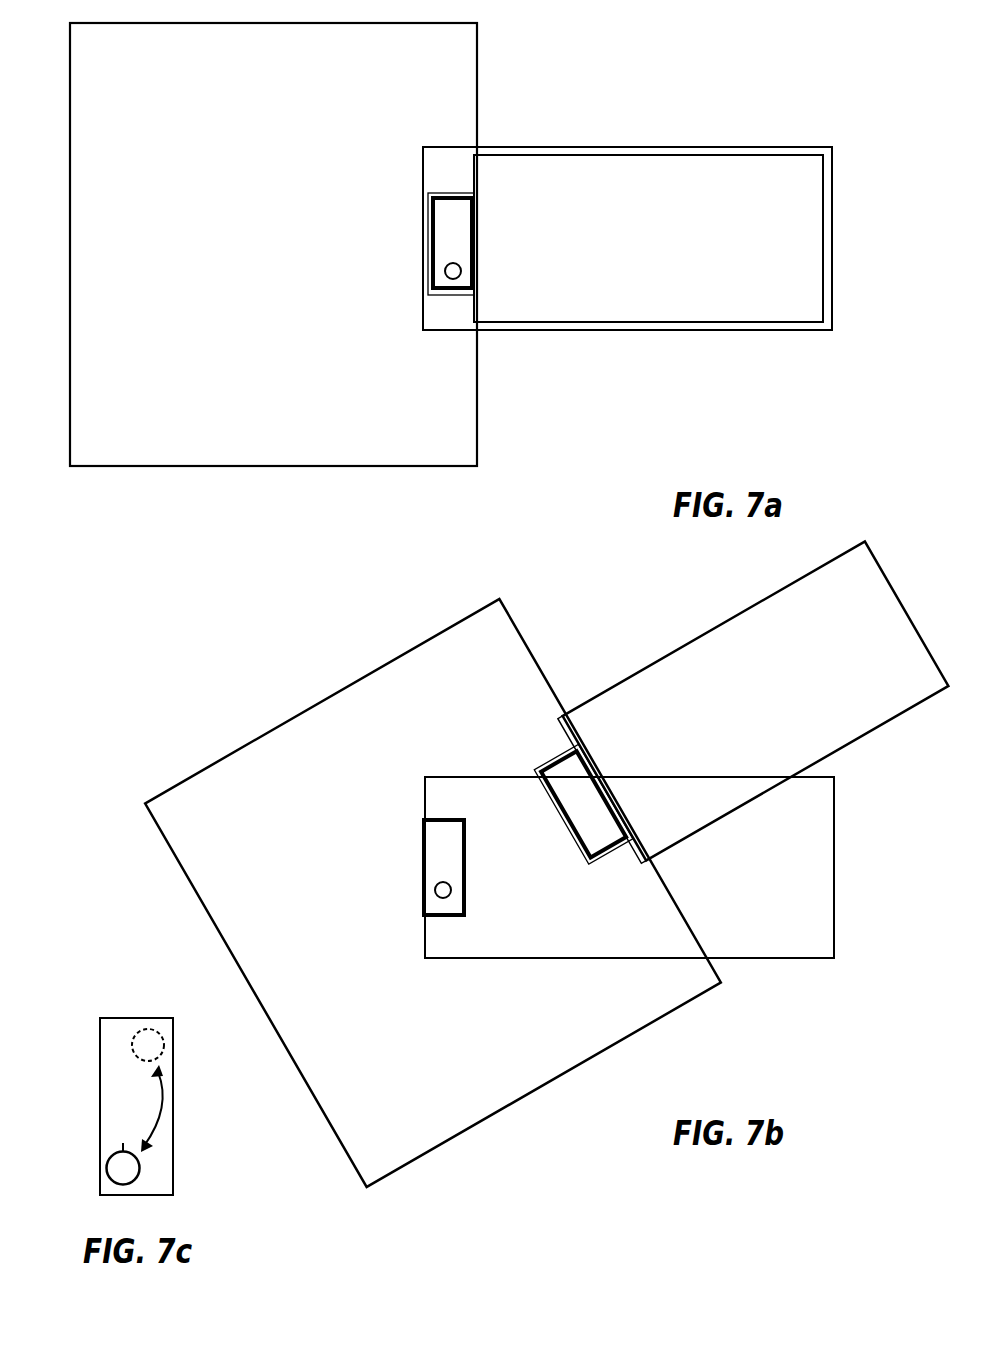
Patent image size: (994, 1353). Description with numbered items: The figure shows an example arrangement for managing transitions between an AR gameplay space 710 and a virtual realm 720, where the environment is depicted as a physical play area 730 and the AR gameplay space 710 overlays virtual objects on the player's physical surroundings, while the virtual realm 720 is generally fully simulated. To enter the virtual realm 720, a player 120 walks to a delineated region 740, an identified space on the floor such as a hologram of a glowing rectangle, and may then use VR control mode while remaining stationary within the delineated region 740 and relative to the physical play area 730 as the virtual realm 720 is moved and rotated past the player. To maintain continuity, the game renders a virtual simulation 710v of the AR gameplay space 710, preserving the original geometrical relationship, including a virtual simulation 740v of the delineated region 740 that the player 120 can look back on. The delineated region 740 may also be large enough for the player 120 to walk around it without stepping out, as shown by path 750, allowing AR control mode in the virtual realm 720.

In FIG. 7a, the virtual realm 720 is at (453, 86).
In FIG. 7b, the virtual realm 720 is at (505, 654).
In FIG. 7a, the AR gameplay space 710 is at (815, 210).
In FIG. 7b, the virtual simulation of the AR gameplay space 710v is at (872, 594).
In FIG. 7a, the physical play area 730 is at (755, 412).
In FIG. 7b, the physical play area 730 is at (812, 946).
In FIG. 7a, the delineated region 740 is at (441, 227).
In FIG. 7b, the delineated region 740 is at (440, 847).
In FIG. 7c, the delineated region 740 is at (100, 1043).
In FIG. 7b, the virtual simulation of the delineated region 740v is at (583, 804).
In FIG. 7a, the player 120 is at (453, 271).
In FIG. 7b, the player 120 is at (443, 890).
In FIG. 7c, the player 120 is at (107, 1167).
In FIG. 7c, the path 750 is at (163, 1105).